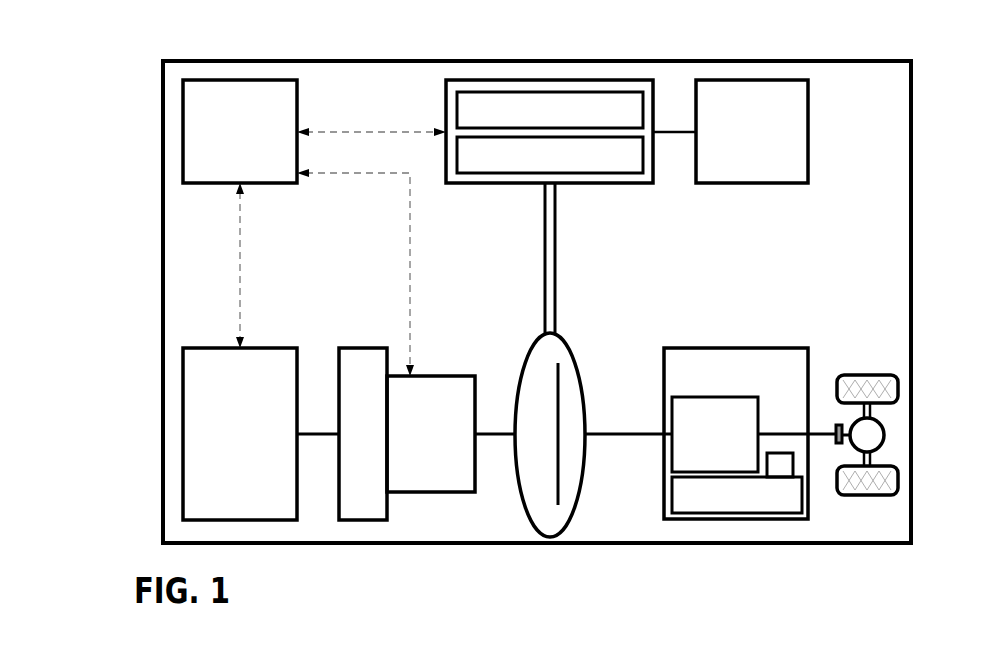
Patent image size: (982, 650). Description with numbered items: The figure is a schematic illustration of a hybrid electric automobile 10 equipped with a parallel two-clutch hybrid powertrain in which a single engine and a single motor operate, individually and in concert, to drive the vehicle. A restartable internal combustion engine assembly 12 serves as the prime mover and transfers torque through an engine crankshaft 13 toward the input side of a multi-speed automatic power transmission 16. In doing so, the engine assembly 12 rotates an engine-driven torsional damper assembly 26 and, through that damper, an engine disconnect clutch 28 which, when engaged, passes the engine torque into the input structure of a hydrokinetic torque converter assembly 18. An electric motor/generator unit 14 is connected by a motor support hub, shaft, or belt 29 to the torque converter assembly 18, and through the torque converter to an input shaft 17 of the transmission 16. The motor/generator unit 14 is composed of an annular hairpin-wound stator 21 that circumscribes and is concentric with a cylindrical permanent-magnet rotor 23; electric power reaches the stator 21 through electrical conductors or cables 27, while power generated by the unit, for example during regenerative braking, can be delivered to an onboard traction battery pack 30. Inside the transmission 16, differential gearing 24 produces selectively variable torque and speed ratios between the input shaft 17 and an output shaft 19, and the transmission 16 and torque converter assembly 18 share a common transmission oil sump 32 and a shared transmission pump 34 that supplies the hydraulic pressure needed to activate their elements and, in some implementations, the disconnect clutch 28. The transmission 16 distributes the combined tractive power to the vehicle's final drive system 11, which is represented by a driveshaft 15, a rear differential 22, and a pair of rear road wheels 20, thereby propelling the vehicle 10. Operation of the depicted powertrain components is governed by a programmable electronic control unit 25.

The automobile 10 is at (150, 40).
The final drive system 11 is at (892, 255).
The internal combustion engine assembly 12 is at (200, 348).
The engine crankshaft 13 is at (316, 434).
The electric motor/generator unit 14 is at (466, 80).
The driveshaft 15 is at (825, 433).
The multi-speed power transmission 16 is at (675, 348).
The transmission input shaft 17 is at (620, 434).
The hydrokinetic torque converter assembly 18 is at (580, 487).
The transmission output shaft 19 is at (497, 434).
The rear road wheels 20 is at (865, 375).
The hairpin-wound stator 21 is at (457, 97).
The rear differential 22 is at (884, 428).
The PM-bearing rotor 23 is at (457, 148).
The differential gearing 24 is at (726, 397).
The programmable electronic control unit 25 is at (200, 80).
The torsional damper assembly 26 is at (375, 348).
The electrical conductors or cables 27 is at (668, 130).
The engine disconnect clutch 28 is at (450, 376).
The motor support hub, shaft, or belt 29 is at (543, 213).
The onboard traction battery pack 30 is at (725, 80).
The transmission oil pan or sump 32 is at (713, 497).
The transmission pump 34 is at (775, 465).